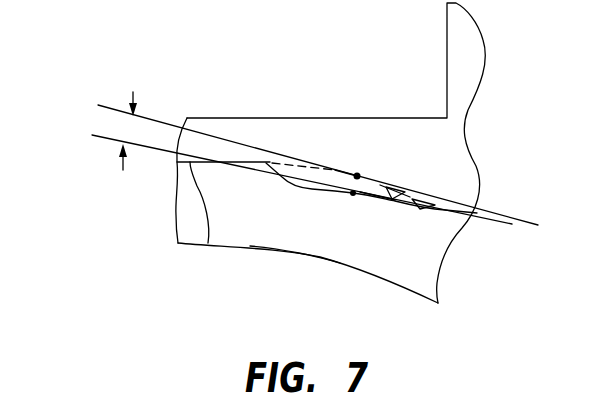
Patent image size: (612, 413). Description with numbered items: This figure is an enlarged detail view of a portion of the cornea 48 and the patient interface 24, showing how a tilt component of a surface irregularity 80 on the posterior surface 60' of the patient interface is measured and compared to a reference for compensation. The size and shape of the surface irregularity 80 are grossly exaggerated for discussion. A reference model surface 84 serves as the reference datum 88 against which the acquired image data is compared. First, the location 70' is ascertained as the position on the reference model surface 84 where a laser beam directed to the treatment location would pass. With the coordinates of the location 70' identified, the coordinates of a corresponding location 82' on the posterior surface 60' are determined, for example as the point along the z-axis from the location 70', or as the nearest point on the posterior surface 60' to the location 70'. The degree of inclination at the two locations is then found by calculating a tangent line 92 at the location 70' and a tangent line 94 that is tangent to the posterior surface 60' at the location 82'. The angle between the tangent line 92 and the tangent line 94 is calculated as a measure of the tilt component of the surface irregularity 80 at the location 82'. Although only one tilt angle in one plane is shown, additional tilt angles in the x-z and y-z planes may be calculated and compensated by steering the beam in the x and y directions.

The patient interface 24 is at (440, 158).
The cornea 48 is at (268, 225).
The posterior surface 60' is at (331, 232).
The location 70' is at (345, 123).
The surface irregularity 80 is at (378, 195).
The corresponding location 82' is at (309, 250).
The reference model surface 84 is at (413, 197).
The reference datum 88 is at (392, 187).
The tangent line 92 is at (158, 118).
The tangent line 94 is at (152, 148).